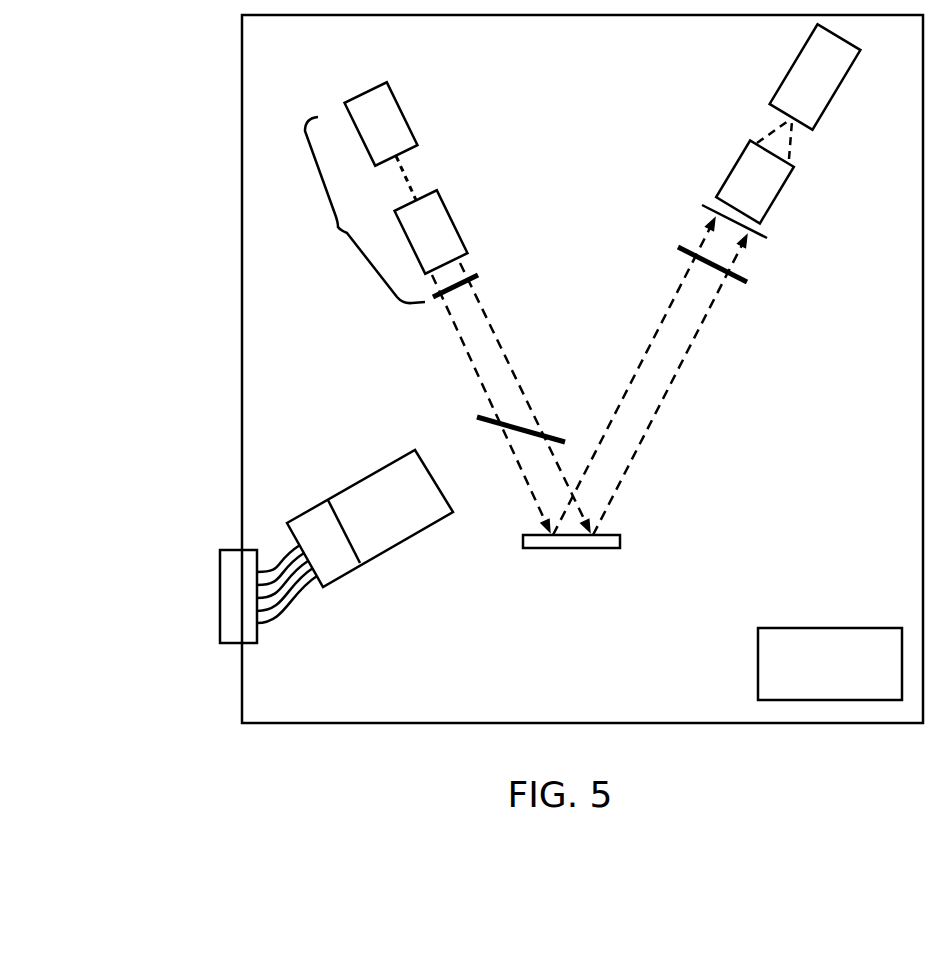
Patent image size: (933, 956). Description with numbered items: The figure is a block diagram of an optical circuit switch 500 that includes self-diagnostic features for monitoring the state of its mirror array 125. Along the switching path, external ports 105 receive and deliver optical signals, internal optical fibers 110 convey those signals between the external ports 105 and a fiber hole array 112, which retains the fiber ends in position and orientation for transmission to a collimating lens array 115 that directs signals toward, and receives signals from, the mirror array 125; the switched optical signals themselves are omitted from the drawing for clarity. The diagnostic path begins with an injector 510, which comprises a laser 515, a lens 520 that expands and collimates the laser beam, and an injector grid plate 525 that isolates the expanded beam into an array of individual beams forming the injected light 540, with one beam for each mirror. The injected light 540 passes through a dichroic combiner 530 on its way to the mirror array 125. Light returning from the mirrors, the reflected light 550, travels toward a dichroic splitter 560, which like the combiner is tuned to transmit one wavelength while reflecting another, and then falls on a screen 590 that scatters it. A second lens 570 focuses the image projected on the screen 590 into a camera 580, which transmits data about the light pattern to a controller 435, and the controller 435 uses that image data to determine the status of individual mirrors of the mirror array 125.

The optical circuit switch 500 is at (582, 369).
The laser 515 is at (381, 141).
The lens 520 is at (431, 232).
The injector 510 is at (339, 210).
The injector grid plate 525 is at (477, 275).
The injected light 540 is at (492, 322).
The dichroic combiner 530 is at (477, 418).
The mirror array 125 is at (570, 550).
The reflected light 550 is at (683, 357).
The dichroic splitter 560 is at (747, 282).
The screen 590 is at (702, 205).
The lens 570 is at (755, 172).
The camera 580 is at (815, 76).
The controller 435 is at (830, 664).
The external ports 105 is at (220, 583).
The internal optical fibers 110 is at (312, 595).
The collimating lens array 115 is at (370, 518).
The fiber hole array 112 is at (345, 577).